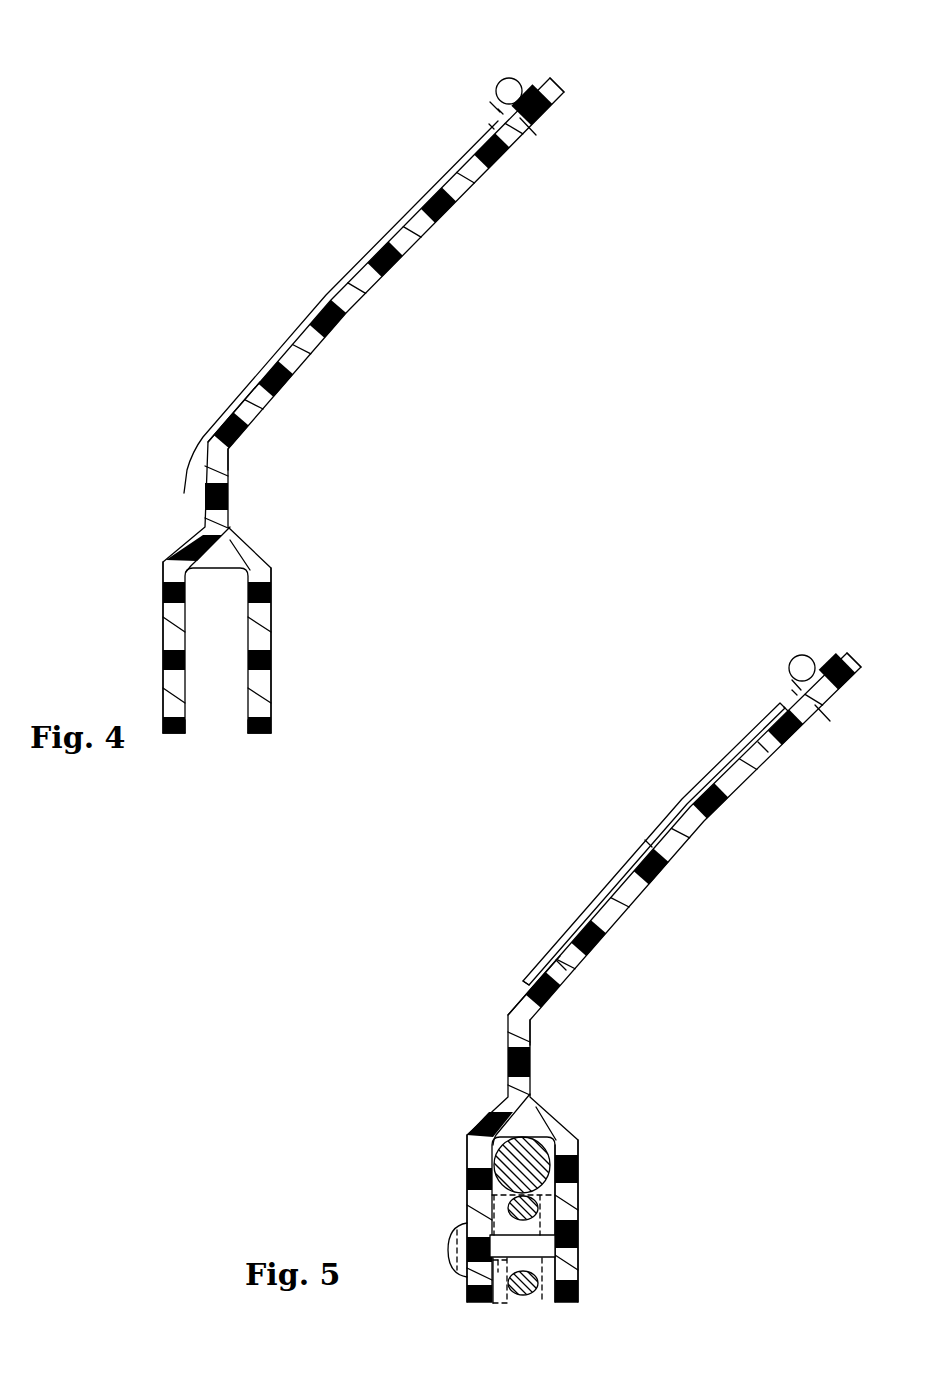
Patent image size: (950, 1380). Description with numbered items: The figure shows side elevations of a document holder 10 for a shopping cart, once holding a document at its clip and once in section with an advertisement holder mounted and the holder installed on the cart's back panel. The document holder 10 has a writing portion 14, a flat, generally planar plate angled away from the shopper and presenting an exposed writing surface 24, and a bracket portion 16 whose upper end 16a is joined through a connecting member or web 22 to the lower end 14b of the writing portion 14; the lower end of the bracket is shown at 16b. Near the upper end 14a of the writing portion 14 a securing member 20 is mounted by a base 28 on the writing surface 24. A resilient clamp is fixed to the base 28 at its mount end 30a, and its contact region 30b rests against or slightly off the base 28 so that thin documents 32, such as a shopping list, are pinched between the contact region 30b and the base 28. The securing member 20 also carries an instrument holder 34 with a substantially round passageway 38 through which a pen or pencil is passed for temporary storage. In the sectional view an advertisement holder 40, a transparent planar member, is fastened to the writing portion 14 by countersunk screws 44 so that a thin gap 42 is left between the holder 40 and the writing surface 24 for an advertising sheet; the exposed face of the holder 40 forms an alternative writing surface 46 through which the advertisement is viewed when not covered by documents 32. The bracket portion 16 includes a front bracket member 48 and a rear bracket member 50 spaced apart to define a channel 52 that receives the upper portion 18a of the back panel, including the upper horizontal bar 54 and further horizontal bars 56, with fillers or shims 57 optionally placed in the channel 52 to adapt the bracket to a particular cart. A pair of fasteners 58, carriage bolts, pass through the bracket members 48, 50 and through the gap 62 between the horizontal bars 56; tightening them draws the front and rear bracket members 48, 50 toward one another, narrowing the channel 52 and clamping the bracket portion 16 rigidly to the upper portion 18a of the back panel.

In FIG. 4, the document holder 10 is at (147, 206).
In FIG. 5, the document holder 10 is at (357, 949).
In FIG. 4, the writing portion 14 is at (385, 284).
In FIG. 5, the writing portion 14 is at (690, 856).
In FIG. 4, the upper end of writing portion 14a is at (573, 80).
In FIG. 5, the upper end of writing portion 14a is at (860, 690).
In FIG. 4, the lower end of writing portion 14b is at (253, 443).
In FIG. 5, the lower end of writing portion 14b is at (548, 1020).
In FIG. 4, the bracket portion 16 is at (165, 604).
In FIG. 5, the bracket portion 16 is at (466, 1167).
In FIG. 4, the upper end of bracket portion 16a is at (162, 539).
In FIG. 5, the upper end of bracket portion 16a is at (474, 1109).
In FIG. 4, the lower end of base 16b is at (292, 722).
In FIG. 5, the upper portion of back panel 18a is at (577, 1181).
In FIG. 4, the securing member 20 is at (527, 85).
In FIG. 5, the securing member 20 is at (807, 667).
In FIG. 4, the connecting member or web 22 is at (230, 488).
In FIG. 5, the connecting member or web 22 is at (507, 1057).
In FIG. 4, the writing surface 24 is at (285, 352).
In FIG. 5, the writing surface 24 is at (687, 812).
In FIG. 4, the base 28 is at (527, 122).
In FIG. 5, the base 28 is at (820, 710).
In FIG. 4, the mount end 30a is at (497, 108).
In FIG. 5, the mount end 30a is at (790, 688).
In FIG. 4, the contact region 30b is at (487, 122).
In FIG. 5, the contact region 30b is at (782, 705).
In FIG. 4, the documents 32 is at (185, 478).
In FIG. 4, the instrument holder 34 is at (492, 100).
In FIG. 5, the instrument holder 34 is at (793, 678).
In FIG. 4, the passageway 38 is at (505, 88).
In FIG. 5, the passageway 38 is at (803, 668).
In FIG. 5, the advertisement holder 40 is at (600, 915).
In FIG. 5, the gap 42 is at (520, 985).
In FIG. 5, the countersunk screws 44 is at (765, 748).
In FIG. 5, the alternative writing surface 46 is at (647, 842).
In FIG. 4, the front bracket member 48 is at (271, 642).
In FIG. 5, the front bracket member 48 is at (580, 1279).
In FIG. 4, the rear bracket member 50 is at (165, 648).
In FIG. 5, the rear bracket member 50 is at (466, 1195).
In FIG. 4, the channel 52 is at (215, 742).
In FIG. 5, the upper horizontal bar 54 is at (535, 1165).
In FIG. 5, the horizontal bars 56 is at (540, 1210).
In FIG. 5, the fillers or shims 57 is at (497, 1305).
In FIG. 5, the fasteners 58 is at (453, 1248).
In FIG. 5, the gap 62 is at (505, 1268).